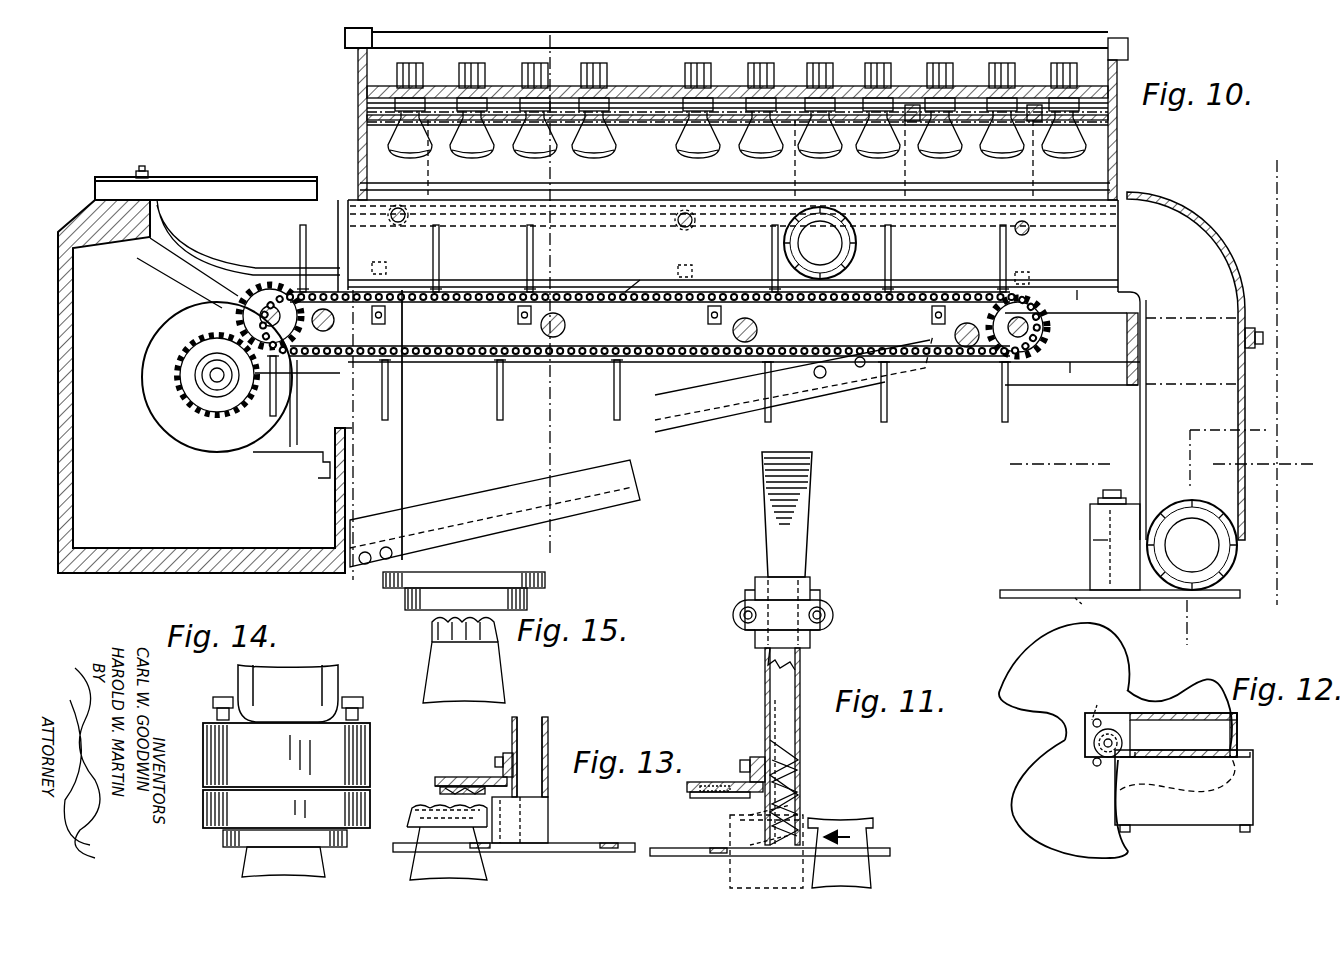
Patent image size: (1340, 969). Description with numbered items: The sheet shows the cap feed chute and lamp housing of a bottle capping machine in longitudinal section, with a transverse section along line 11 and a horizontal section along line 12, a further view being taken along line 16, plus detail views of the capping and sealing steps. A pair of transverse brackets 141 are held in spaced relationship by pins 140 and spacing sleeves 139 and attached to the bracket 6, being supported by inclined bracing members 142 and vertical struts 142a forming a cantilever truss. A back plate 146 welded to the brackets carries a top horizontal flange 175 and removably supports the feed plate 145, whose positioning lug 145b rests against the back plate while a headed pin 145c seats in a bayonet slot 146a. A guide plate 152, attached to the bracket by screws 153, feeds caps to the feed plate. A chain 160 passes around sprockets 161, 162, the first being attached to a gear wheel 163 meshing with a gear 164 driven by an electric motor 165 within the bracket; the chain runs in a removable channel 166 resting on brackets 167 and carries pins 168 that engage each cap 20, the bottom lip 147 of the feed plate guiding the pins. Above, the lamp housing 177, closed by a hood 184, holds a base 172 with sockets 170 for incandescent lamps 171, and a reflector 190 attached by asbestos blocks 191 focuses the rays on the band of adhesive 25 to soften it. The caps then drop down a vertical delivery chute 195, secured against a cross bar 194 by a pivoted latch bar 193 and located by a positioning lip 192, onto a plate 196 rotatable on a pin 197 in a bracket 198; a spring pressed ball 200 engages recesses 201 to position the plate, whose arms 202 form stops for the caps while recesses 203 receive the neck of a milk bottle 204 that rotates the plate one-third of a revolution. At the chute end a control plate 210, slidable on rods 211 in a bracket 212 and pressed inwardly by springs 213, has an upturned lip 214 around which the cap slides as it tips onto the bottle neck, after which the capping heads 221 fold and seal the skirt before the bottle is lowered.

In FIG. 10, the bracket 6 is at (132, 570).
In FIG. 10, the section line 11— 11 is at (1247, 193).
In FIG. 10, the section line 12— 12 is at (1030, 495).
In FIG. 10, the section line 16— 16 is at (542, 39).
In FIG. 10, the cap 20 is at (775, 224).
In FIG. 11, the cap 20 is at (789, 757).
In FIG. 13, the cap 20 is at (410, 823).
In FIG. 15, the cap 20 is at (430, 637).
In FIG. 10, the band of adhesive 25 is at (857, 229).
In FIG. 10, the spacing sleeves 139 is at (405, 292).
In FIG. 10, the pins 140 is at (324, 333).
In FIG. 10, the transverse brackets 141 is at (366, 370).
In FIG. 11, the transverse brackets 141 is at (753, 640).
In FIG. 10, the inclined bracing members 142 is at (690, 413).
In FIG. 10, the vertical struts 142a is at (390, 480).
In FIG. 10, the feed plate 145 is at (353, 200).
In FIG. 10, the positioning lug 145b is at (400, 250).
In FIG. 10, the pin 145c is at (410, 218).
In FIG. 10, the back plate 146 is at (1013, 228).
In FIG. 10, the bayonet slots 146a is at (392, 220).
In FIG. 10, the bottom lip 147 is at (1077, 290).
In FIG. 10, the guide plate 152 is at (252, 208).
In FIG. 10, the screws 153 is at (146, 172).
In FIG. 10, the chain 160 is at (556, 312).
In FIG. 10, the sprocket 161 is at (268, 298).
In FIG. 10, the sprocket 162 is at (1030, 330).
In FIG. 10, the gear wheel 163 is at (238, 306).
In FIG. 10, the gear 164 is at (175, 382).
In FIG. 10, the electric motor 165 is at (178, 420).
In FIG. 10, the channel 166 is at (630, 306).
In FIG. 10, the brackets 167 is at (516, 318).
In FIG. 10, the pins 168 is at (303, 228).
In FIG. 10, the sockets 170 is at (420, 72).
In FIG. 10, the incandescent lamps 171 is at (470, 150).
In FIG. 10, the base 172 is at (496, 88).
In FIG. 10, the top horizontal flange 175 is at (563, 212).
In FIG. 10, the lamp housing 177 is at (355, 74).
In FIG. 10, the hood 184 is at (345, 36).
In FIG. 10, the reflector 190 is at (376, 150).
In FIG. 10, the asbestos blocks 191 is at (428, 171).
In FIG. 10, the positioning lip 192 is at (1210, 312).
In FIG. 11, the positioning lip 192 is at (812, 572).
In FIG. 10, the pivoted latch bar 193 is at (1256, 334).
In FIG. 11, the pivoted latch bar 193 is at (778, 605).
In FIG. 10, the cross bar 194 is at (1127, 355).
In FIG. 10, the vertical delivery chute 195 is at (1185, 405).
In FIG. 11, the vertical delivery chute 195 is at (806, 493).
In FIG. 12, the vertical delivery chute 195 is at (1220, 738).
In FIG. 10, the plate 196 is at (1238, 591).
In FIG. 11, the plate 196 is at (693, 854).
In FIG. 12, the plate 196 is at (1100, 647).
In FIG. 13, the plate 196 is at (572, 853).
In FIG. 10, the pin 197 is at (1097, 502).
In FIG. 12, the pin 197 is at (1105, 745).
In FIG. 10, the bracket 198 is at (1097, 553).
In FIG. 11, the bracket 198 is at (803, 813).
In FIG. 12, the bracket 198 is at (1095, 722).
In FIG. 13, the bracket 198 is at (520, 780).
In FIG. 10, the spring pressed ball 200 is at (1085, 600).
In FIG. 12, the spring pressed ball 200 is at (1107, 698).
In FIG. 12, the recesses 201 is at (1103, 770).
In FIG. 12, the arms 202 is at (1040, 652).
In FIG. 12, the recesses 203 is at (1153, 695).
In FIG. 11, the milk bottle 204 is at (858, 873).
In FIG. 13, the milk bottle 204 is at (450, 805).
In FIG. 14, the milk bottle 204 is at (250, 862).
In FIG. 15, the milk bottle 204 is at (480, 675).
In FIG. 11, the control plate 210 is at (712, 808).
In FIG. 11, the rods 211 is at (690, 793).
In FIG. 12, the rods 211 is at (1131, 827).
In FIG. 13, the rods 211 is at (438, 790).
In FIG. 11, the bracket 212 is at (722, 780).
In FIG. 12, the bracket 212 is at (1233, 800).
In FIG. 13, the bracket 212 is at (470, 777).
In FIG. 11, the springs 213 is at (703, 780).
In FIG. 13, the springs 213 is at (456, 779).
In FIG. 11, the upturned lip 214 is at (799, 795).
In FIG. 13, the upturned lip 214 is at (510, 790).
In FIG. 14, the capping heads 221 is at (370, 742).
In FIG. 15, the capping heads 221 is at (403, 588).